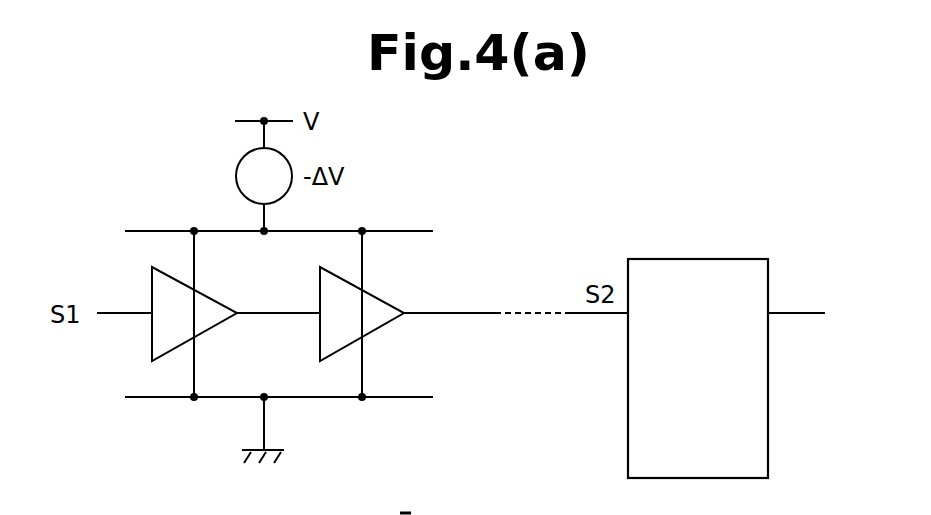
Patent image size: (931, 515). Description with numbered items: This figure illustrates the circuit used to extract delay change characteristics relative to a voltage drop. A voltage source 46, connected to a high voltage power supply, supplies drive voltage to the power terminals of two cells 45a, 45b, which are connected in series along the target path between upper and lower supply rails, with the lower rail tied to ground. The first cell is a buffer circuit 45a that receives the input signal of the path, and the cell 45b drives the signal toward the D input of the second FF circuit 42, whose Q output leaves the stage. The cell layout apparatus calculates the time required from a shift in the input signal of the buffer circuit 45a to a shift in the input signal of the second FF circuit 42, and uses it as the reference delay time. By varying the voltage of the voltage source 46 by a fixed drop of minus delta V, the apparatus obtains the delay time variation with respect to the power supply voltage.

The voltage source 46 is at (236, 171).
The buffer circuit 45a is at (152, 284).
The cell 45b is at (376, 288).
The second FF circuit 42 is at (698, 259).